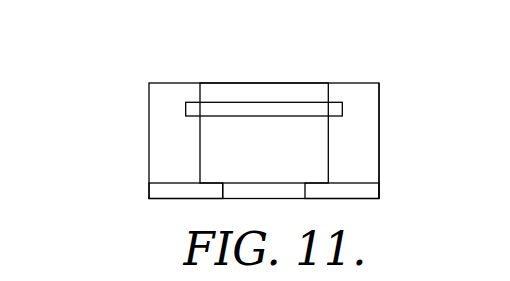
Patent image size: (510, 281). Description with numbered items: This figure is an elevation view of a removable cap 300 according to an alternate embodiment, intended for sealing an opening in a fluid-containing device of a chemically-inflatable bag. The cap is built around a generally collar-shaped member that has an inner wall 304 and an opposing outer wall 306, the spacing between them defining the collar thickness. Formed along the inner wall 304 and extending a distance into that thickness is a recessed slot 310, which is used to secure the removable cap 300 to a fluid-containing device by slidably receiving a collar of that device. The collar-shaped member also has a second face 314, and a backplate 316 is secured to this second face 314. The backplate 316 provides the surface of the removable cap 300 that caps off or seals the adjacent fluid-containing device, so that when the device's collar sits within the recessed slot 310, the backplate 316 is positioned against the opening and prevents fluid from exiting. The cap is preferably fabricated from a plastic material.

The removable cap 300 is at (317, 51).
The inner wall 304 is at (244, 161).
The outer wall 306 is at (380, 133).
The recessed slot 310 is at (254, 110).
The second face 314 is at (162, 183).
The backplate 316 is at (364, 192).